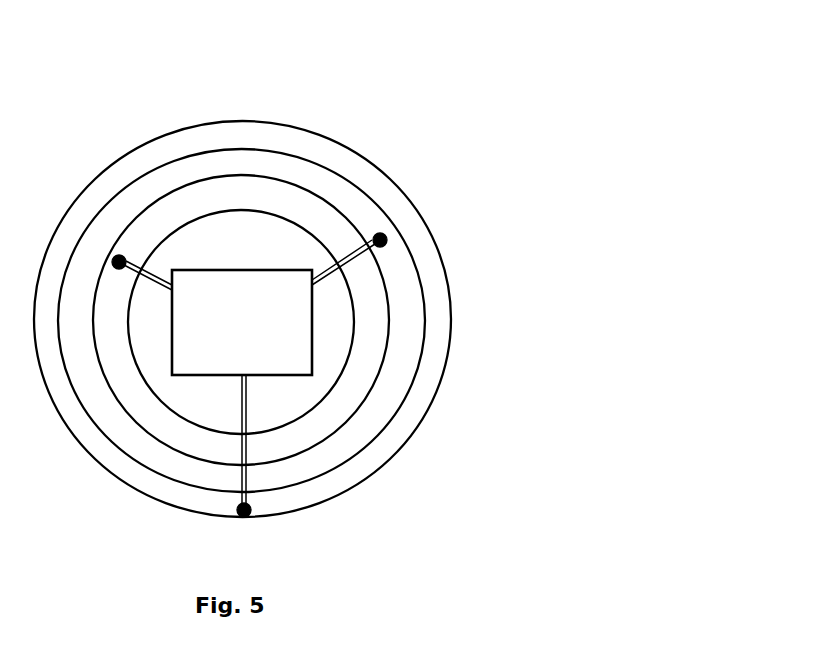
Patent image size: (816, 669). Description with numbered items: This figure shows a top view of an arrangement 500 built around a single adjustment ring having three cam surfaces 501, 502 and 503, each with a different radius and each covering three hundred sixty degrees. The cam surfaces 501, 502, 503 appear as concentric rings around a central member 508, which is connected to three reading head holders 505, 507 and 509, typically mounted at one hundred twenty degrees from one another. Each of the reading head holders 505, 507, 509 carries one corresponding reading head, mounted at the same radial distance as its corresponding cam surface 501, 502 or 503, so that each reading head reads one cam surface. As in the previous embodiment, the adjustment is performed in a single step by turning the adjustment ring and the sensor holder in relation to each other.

The antenna arrangement 500 is at (498, 96).
The cam surface 501 is at (433, 327).
The cam surface 502 is at (407, 293).
The cam surface 503 is at (367, 277).
The reading head holder 505 is at (152, 283).
The reading head holder 507 is at (324, 280).
The electronics module 508 is at (278, 270).
The reading head holder 509 is at (242, 432).